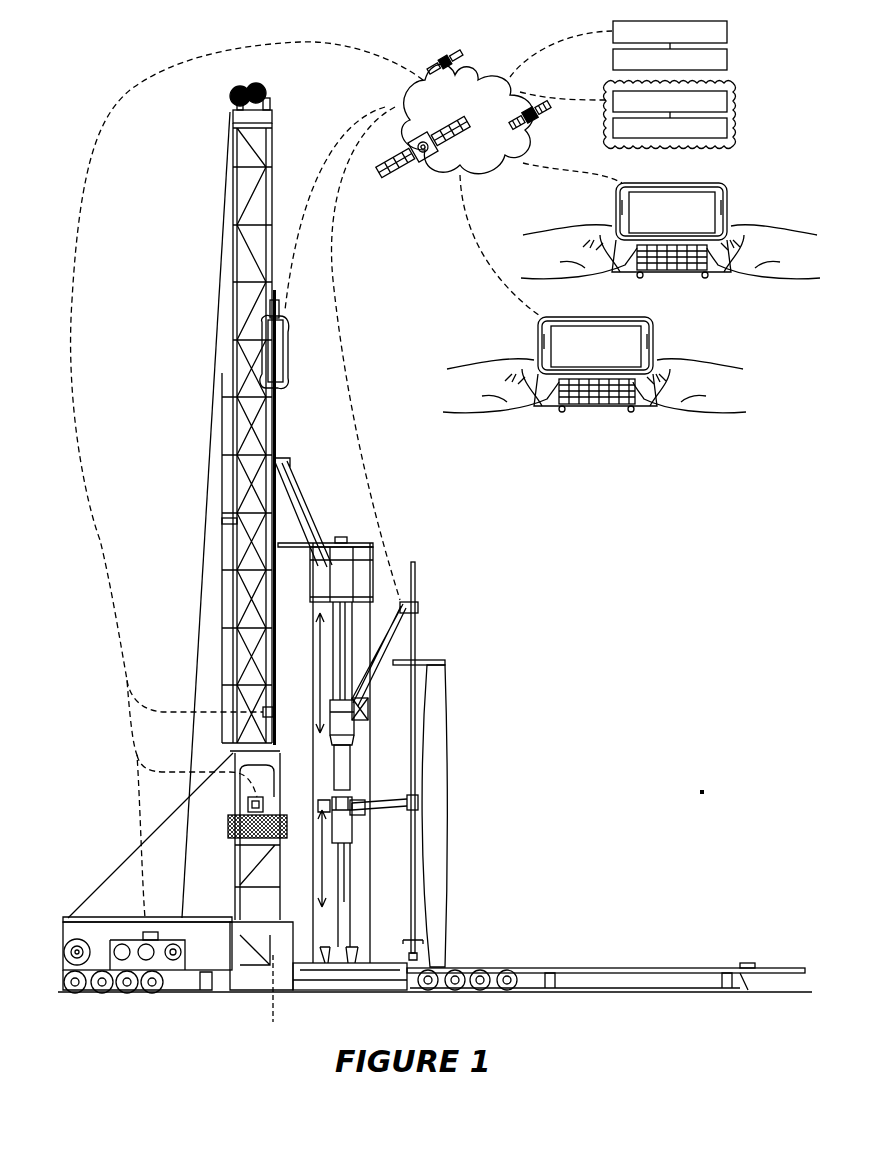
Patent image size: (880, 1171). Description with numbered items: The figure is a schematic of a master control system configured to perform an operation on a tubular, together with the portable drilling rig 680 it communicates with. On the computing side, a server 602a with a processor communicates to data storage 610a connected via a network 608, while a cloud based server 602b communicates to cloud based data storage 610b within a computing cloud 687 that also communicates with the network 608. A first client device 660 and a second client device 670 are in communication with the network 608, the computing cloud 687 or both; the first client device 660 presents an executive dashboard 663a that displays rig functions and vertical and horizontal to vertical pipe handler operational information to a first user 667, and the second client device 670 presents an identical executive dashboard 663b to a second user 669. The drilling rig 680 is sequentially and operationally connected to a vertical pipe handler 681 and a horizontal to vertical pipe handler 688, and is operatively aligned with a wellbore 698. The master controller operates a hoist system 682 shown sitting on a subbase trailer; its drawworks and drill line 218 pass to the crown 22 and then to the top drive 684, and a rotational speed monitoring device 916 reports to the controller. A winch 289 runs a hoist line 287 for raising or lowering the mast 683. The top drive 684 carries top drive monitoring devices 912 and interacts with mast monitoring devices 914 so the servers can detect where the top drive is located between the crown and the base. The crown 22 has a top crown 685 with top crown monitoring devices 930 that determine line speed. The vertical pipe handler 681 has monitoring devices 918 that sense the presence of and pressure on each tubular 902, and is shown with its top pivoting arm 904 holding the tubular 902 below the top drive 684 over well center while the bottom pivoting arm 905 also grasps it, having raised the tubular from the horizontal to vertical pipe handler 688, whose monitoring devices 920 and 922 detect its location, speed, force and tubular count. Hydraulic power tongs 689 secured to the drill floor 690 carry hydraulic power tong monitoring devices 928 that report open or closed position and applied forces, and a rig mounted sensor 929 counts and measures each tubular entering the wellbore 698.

The drilling rig 680 is at (103, 90).
The top crown 685 is at (236, 90).
The top crown monitoring device 930 is at (270, 100).
The crown 22 is at (272, 118).
The mast 683 is at (233, 197).
The network 608 is at (468, 74).
The server 602a is at (727, 34).
The data storage 610a is at (727, 62).
The computing cloud 687 is at (733, 86).
The cloud based server 602b is at (727, 102).
The cloud based data storage 610b is at (727, 130).
The executive dashboard 663a is at (675, 192).
The first client device 660 is at (727, 188).
The first user 667 is at (780, 235).
The executive dashboard 663b is at (603, 326).
The second client device 670 is at (652, 322).
The second user 669 is at (706, 370).
The top drive monitoring device 912 is at (284, 346).
The top drive 684 is at (285, 364).
The mast monitoring device 914 is at (233, 522).
The vertical pipe handler 681 is at (395, 536).
The drill line 218 is at (200, 592).
The tubular 902 is at (416, 580).
The vertical pipe handler monitoring device 918 is at (418, 607).
The horizontal to vertical pipe handler monitoring device 920 is at (428, 664).
The rig mounted sensor 929 is at (274, 712).
The top pivoting arm 904 is at (383, 672).
The horizontal to vertical pipe handler 688 is at (707, 790).
The hydraulic power tong monitoring device 928 is at (330, 796).
The bottom pivoting arm 905 is at (404, 812).
The hydraulic power tongs 689 is at (248, 805).
The drill floor 690 is at (230, 836).
The hoist line 287 is at (110, 882).
The rotational speed monitoring device 916 is at (152, 931).
The winch 289 is at (64, 955).
The hoist system 682 is at (188, 962).
The horizontal to vertical pipe handler monitoring device 922 is at (750, 963).
The wellbore 698 is at (280, 993).